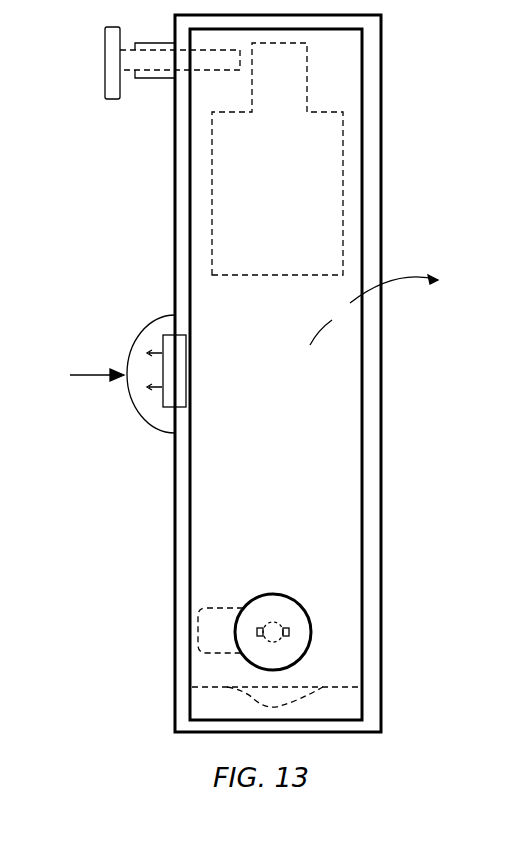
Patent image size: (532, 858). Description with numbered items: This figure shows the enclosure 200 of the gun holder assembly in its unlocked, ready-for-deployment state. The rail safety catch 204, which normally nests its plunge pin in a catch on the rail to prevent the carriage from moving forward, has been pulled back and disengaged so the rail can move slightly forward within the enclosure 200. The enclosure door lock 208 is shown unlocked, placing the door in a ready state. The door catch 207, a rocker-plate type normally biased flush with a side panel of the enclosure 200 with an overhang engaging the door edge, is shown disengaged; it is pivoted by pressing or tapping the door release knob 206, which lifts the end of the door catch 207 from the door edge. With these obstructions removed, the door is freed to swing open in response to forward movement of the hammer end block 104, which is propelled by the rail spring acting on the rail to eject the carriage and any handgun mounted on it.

The enclosure 200 is at (168, 149).
The rail safety catch 204 is at (108, 45).
The hammer end block 104 is at (210, 228).
The door release knob 206 is at (150, 335).
The door catch 207 is at (178, 397).
The enclosure door lock 208 is at (206, 599).